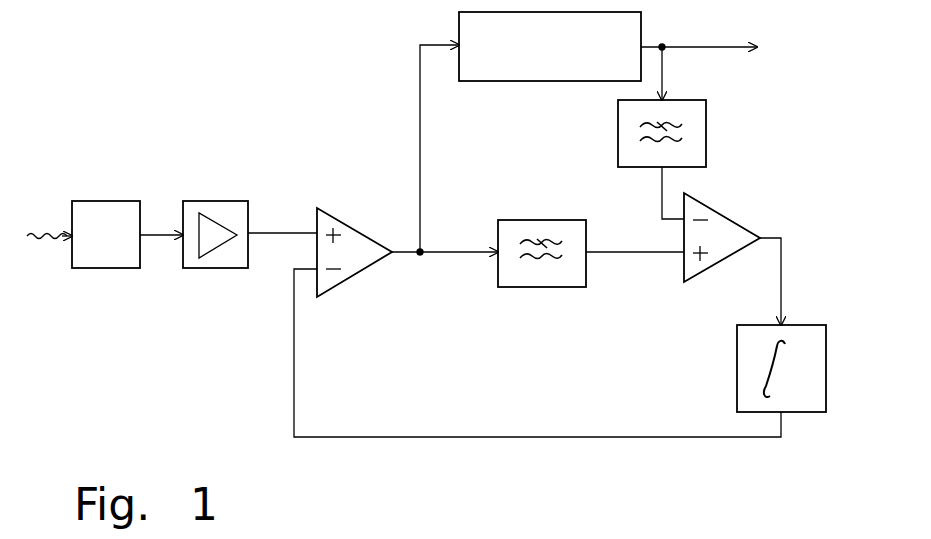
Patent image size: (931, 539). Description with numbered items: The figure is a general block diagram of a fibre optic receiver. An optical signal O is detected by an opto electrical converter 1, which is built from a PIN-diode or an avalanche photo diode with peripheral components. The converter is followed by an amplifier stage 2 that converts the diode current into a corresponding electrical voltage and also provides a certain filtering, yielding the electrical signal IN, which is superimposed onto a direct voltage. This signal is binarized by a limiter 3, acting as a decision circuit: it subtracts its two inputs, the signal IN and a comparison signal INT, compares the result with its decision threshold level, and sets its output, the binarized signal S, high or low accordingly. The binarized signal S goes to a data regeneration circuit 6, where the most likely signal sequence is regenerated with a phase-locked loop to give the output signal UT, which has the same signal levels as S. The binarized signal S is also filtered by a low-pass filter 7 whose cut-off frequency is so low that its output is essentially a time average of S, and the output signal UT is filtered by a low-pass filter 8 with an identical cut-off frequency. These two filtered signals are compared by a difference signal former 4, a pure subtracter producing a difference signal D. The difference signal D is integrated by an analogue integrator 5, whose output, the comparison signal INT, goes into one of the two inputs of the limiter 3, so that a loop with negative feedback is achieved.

The opto electrical converter 1 is at (118, 208).
The amplifier stage 2 is at (233, 208).
The limiter 3 is at (349, 272).
The difference signal former 4 is at (711, 260).
The analogue integrator 5 is at (815, 408).
The data regeneration circuit 6 is at (523, 72).
The low-pass filter 7 is at (568, 278).
The low-pass filter 8 is at (702, 118).
The optical signal O is at (56, 228).
The electrical signal IN is at (264, 232).
The binarized signal S is at (420, 165).
The output signal UT is at (718, 49).
The difference signal D is at (783, 250).
The comparison signal INT is at (296, 361).